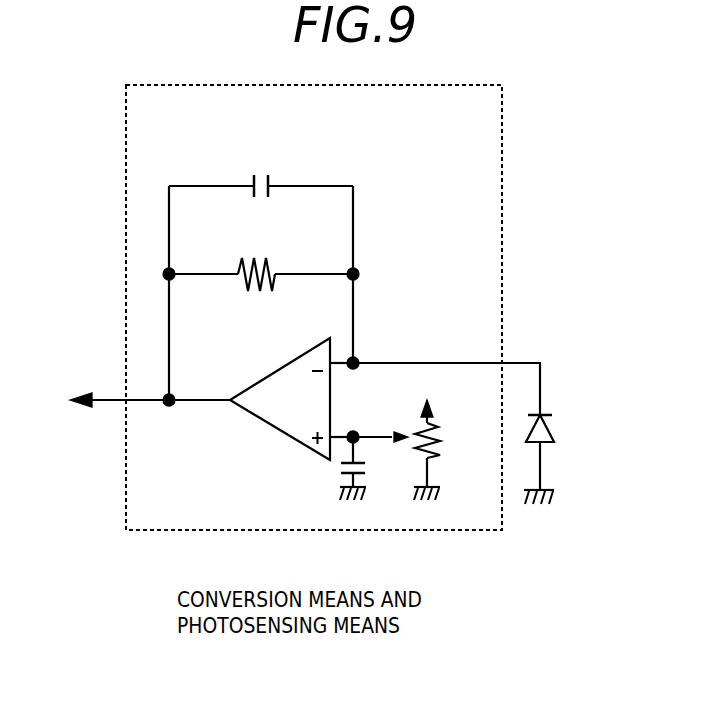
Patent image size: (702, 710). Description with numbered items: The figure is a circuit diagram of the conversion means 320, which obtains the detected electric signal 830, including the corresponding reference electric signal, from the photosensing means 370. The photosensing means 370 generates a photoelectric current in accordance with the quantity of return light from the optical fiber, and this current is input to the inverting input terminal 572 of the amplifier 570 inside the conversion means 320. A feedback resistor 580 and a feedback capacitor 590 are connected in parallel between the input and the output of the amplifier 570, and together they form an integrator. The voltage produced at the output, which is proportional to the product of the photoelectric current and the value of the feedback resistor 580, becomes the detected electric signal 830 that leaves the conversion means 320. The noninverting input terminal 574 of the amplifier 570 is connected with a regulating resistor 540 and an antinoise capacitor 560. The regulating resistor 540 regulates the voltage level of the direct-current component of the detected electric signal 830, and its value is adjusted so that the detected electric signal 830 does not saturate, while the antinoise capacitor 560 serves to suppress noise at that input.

The conversion means 320 is at (503, 185).
The capacitor C20 590 is at (264, 172).
The resistor R21 580 is at (267, 262).
The amplifier 570 is at (272, 410).
The inverting input terminal 572 is at (333, 362).
The noninverting input terminal 574 is at (333, 436).
The detected electric signal 830 is at (105, 398).
The antinoise capacitor 560 is at (367, 477).
The regulating resistor 540 is at (447, 450).
The photosensing means 370 is at (552, 425).